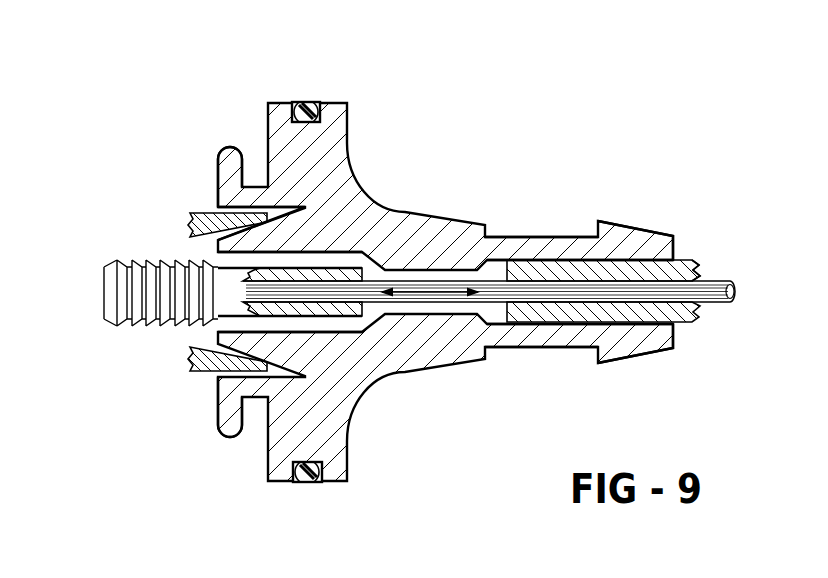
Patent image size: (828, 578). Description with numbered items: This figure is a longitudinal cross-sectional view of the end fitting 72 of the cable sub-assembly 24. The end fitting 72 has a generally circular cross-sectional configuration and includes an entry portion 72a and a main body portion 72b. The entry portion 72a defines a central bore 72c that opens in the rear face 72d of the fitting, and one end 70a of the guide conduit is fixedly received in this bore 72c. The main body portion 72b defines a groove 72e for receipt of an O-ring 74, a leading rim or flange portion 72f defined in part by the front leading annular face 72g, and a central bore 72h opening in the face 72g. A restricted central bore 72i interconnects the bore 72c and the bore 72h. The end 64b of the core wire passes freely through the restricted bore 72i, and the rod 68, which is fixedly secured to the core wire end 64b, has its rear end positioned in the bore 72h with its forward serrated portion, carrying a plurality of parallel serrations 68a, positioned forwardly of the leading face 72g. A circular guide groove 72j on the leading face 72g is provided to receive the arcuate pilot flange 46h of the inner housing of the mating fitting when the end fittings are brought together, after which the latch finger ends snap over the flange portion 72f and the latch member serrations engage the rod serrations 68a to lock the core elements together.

The cable sub-assembly 24 is at (553, 120).
The arcuate pilot flange 46h is at (197, 373).
The end of core wire 64b is at (403, 277).
The rod 68 is at (109, 251).
The serrations 68a is at (118, 300).
The end of guide conduit 70a is at (688, 260).
The end fitting 72 is at (445, 263).
The entry portion 72a is at (580, 233).
The main body portion 72b is at (323, 233).
The central bore 72c is at (593, 313).
The rear face 72d is at (680, 243).
The groove 72e is at (292, 468).
The leading rim or flange portion 72f is at (217, 160).
The front leading annular face 72g is at (214, 418).
The central bore 72h is at (214, 333).
The restricted central bore 72i is at (412, 320).
The circular guide groove 72j is at (217, 192).
The O-ring 74 is at (312, 100).